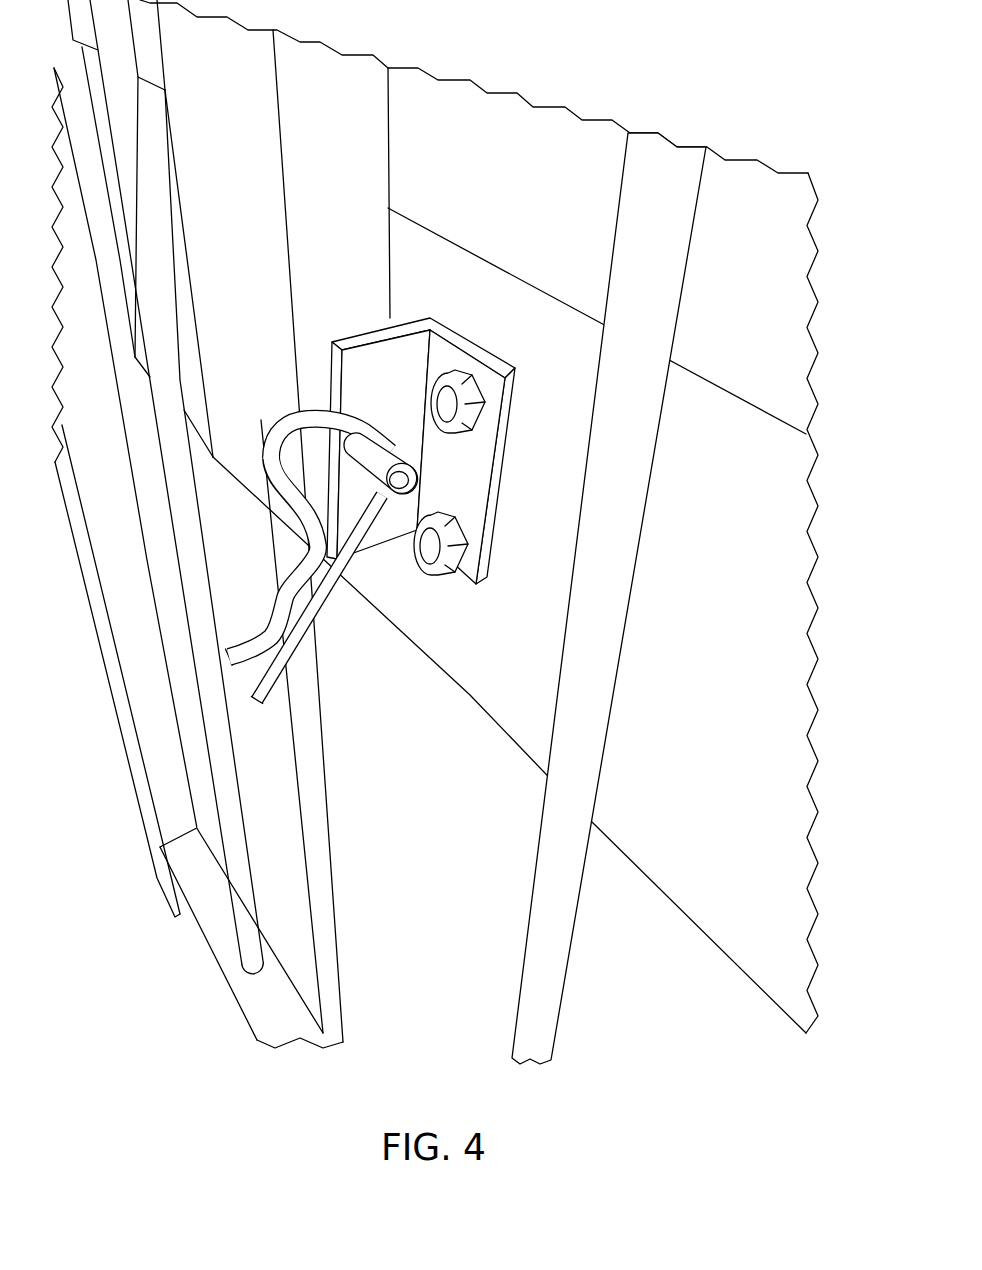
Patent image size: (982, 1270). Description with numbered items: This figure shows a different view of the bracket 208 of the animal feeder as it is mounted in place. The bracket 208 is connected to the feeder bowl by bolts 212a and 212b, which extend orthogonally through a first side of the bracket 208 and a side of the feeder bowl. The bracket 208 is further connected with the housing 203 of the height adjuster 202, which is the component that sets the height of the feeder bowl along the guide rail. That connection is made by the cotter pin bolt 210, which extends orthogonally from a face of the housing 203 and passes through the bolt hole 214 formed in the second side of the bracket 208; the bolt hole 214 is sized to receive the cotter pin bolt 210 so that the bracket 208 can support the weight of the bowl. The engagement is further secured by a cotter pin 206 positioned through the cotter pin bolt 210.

The height adjuster 202 is at (261, 229).
The housing 203 is at (262, 354).
The cotter pin 206 is at (250, 633).
The bracket 208 is at (482, 457).
The cotter pin bolt 210 is at (398, 452).
The bolt 212a is at (473, 398).
The bolt 212b is at (462, 547).
The bolt hole 214 is at (302, 440).